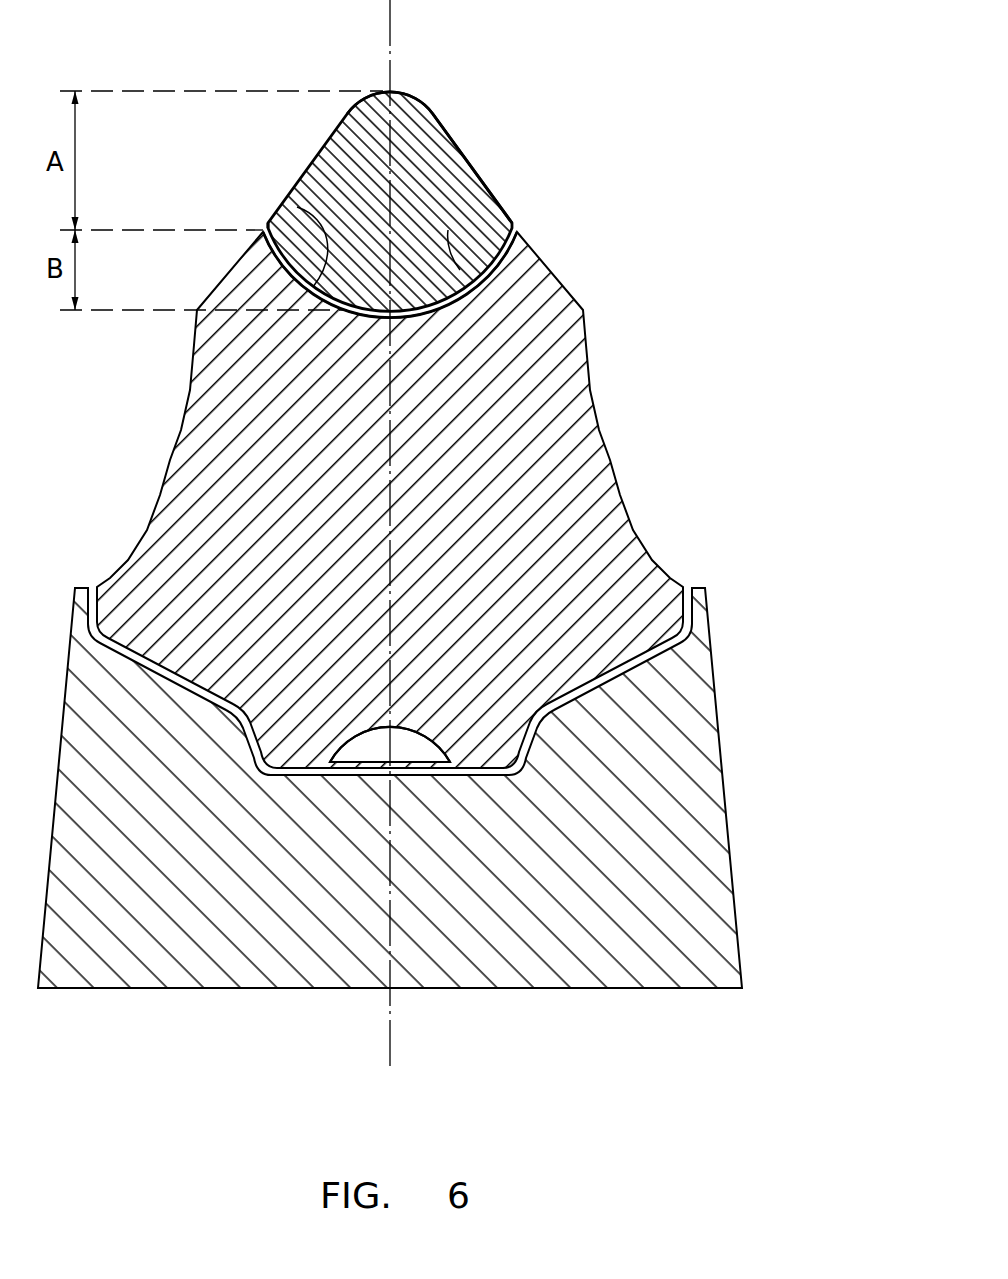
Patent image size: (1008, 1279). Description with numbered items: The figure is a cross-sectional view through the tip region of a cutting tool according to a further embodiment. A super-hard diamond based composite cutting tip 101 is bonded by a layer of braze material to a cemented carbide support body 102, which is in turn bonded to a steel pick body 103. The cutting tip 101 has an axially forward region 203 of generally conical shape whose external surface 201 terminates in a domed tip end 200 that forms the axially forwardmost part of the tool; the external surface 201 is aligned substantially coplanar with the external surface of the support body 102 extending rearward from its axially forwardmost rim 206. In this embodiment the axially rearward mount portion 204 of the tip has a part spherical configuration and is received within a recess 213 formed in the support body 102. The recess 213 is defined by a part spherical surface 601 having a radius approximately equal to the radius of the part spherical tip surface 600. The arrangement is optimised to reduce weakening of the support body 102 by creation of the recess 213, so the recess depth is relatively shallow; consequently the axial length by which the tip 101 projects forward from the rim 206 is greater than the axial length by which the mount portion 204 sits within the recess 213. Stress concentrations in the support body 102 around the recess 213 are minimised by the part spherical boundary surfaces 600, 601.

The cutting tip 101 is at (480, 133).
The support body 102 is at (625, 388).
The pick body 103 is at (725, 742).
The domed tip end 200 is at (406, 91).
The external surface 201 is at (482, 180).
The forward region 203 is at (350, 155).
The mount portion 204 is at (435, 314).
The rim 206 is at (268, 230).
The recess 213 is at (448, 230).
The part spherical tip surface 600 is at (436, 285).
The part spherical surface 601 is at (297, 207).